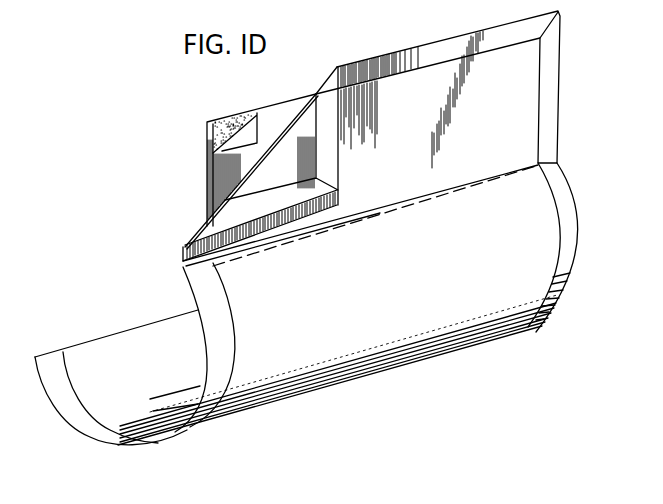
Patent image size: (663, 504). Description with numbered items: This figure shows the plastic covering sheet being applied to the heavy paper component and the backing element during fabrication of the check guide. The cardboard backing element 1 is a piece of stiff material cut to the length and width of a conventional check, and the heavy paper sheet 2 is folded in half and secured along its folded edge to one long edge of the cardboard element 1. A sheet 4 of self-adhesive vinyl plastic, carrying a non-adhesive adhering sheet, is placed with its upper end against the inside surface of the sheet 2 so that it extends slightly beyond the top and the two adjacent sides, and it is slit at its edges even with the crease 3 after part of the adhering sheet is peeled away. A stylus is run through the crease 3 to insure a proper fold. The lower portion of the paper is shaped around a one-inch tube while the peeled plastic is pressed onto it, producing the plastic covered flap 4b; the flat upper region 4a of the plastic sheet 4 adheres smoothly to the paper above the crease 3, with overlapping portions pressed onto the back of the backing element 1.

The cardboard backing element 1 is at (222, 126).
The heavy paper sheet 2 is at (278, 128).
The crease 3 is at (380, 209).
The self-adhesive vinyl plastic sheet 4 is at (407, 350).
The flat portion of cylindrical member 4a is at (548, 78).
The plastic covered flap 4b is at (540, 217).